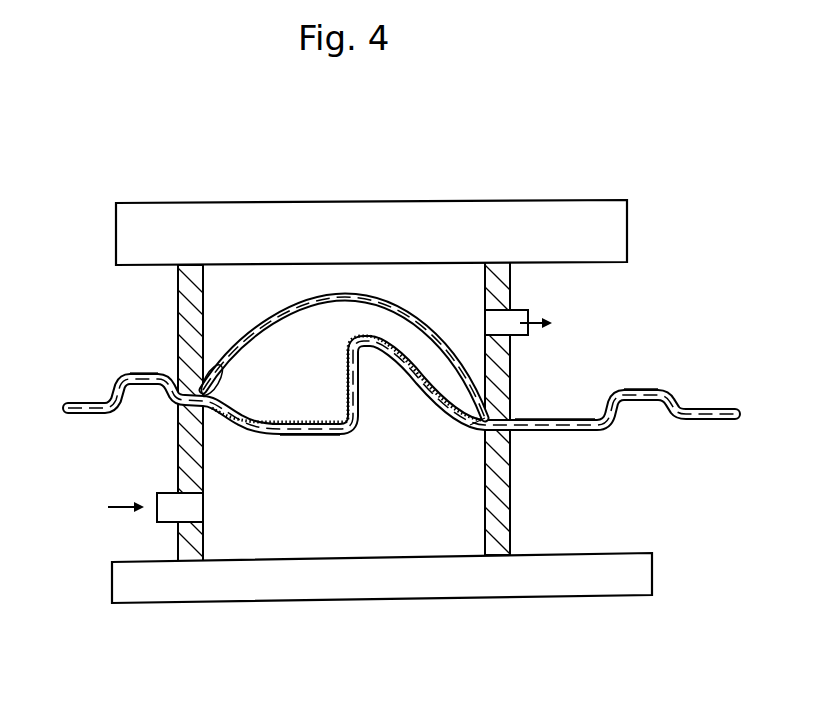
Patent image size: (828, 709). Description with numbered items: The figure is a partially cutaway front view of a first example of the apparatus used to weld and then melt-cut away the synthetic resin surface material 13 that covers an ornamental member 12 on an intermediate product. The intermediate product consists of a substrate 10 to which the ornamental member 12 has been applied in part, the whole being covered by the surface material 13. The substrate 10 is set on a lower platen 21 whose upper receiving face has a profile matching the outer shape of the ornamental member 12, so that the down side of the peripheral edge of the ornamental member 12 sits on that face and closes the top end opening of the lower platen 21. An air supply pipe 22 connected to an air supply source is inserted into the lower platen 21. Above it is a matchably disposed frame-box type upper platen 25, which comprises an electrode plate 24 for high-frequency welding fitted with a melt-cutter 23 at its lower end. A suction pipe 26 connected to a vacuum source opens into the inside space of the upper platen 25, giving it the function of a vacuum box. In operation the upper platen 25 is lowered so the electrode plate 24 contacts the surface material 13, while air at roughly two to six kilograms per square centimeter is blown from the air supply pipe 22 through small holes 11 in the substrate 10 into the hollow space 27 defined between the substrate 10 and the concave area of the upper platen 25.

The substrate 10 is at (634, 406).
The small holes 11 is at (303, 440).
The ornamental member 12 is at (274, 418).
The synthetic resin surface material 13 is at (645, 388).
The lower platen 21 is at (406, 597).
The air supply pipe 22 is at (165, 512).
The melt-cutter 23 is at (228, 350).
The electrode plate 24 is at (180, 378).
The upper platen 25 is at (525, 212).
The suction pipe 26 is at (525, 310).
The hollow space 27 is at (353, 320).